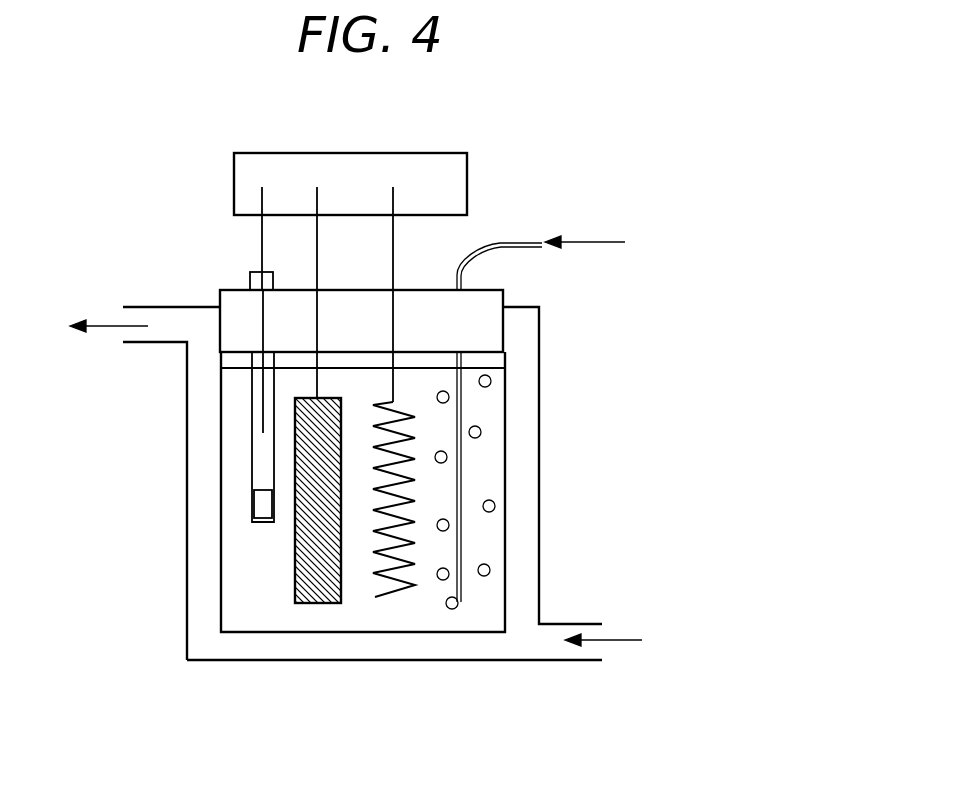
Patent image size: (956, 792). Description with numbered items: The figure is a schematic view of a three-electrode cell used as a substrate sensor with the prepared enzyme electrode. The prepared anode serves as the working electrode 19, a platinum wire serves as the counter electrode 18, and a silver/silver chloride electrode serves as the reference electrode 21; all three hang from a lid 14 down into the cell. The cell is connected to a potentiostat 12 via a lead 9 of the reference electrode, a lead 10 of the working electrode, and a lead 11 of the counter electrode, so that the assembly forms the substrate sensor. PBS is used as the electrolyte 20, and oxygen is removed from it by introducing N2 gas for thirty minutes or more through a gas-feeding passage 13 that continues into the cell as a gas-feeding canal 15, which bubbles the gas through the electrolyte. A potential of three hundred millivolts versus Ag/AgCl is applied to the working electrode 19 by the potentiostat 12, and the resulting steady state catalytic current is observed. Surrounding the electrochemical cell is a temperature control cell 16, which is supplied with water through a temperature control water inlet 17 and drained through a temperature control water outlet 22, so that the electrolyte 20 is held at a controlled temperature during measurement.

The lead of the reference electrode 9 is at (262, 187).
The lead of the working electrode 10 is at (317, 187).
The lead of the counter electrode 11 is at (393, 187).
The potentiostat 12 is at (437, 187).
The gas-feeding passage 13 is at (545, 242).
The lid 14 is at (495, 333).
The gas-feeding canal 15 is at (462, 477).
The temperature control cell 16 is at (523, 578).
The temperature control water inlet 17 is at (555, 636).
The counter electrode 18 is at (403, 593).
The working electrode 19 is at (325, 590).
The electrolyte 20 is at (251, 603).
The reference electrode 21 is at (258, 461).
The temperature control water outlet 22 is at (170, 321).